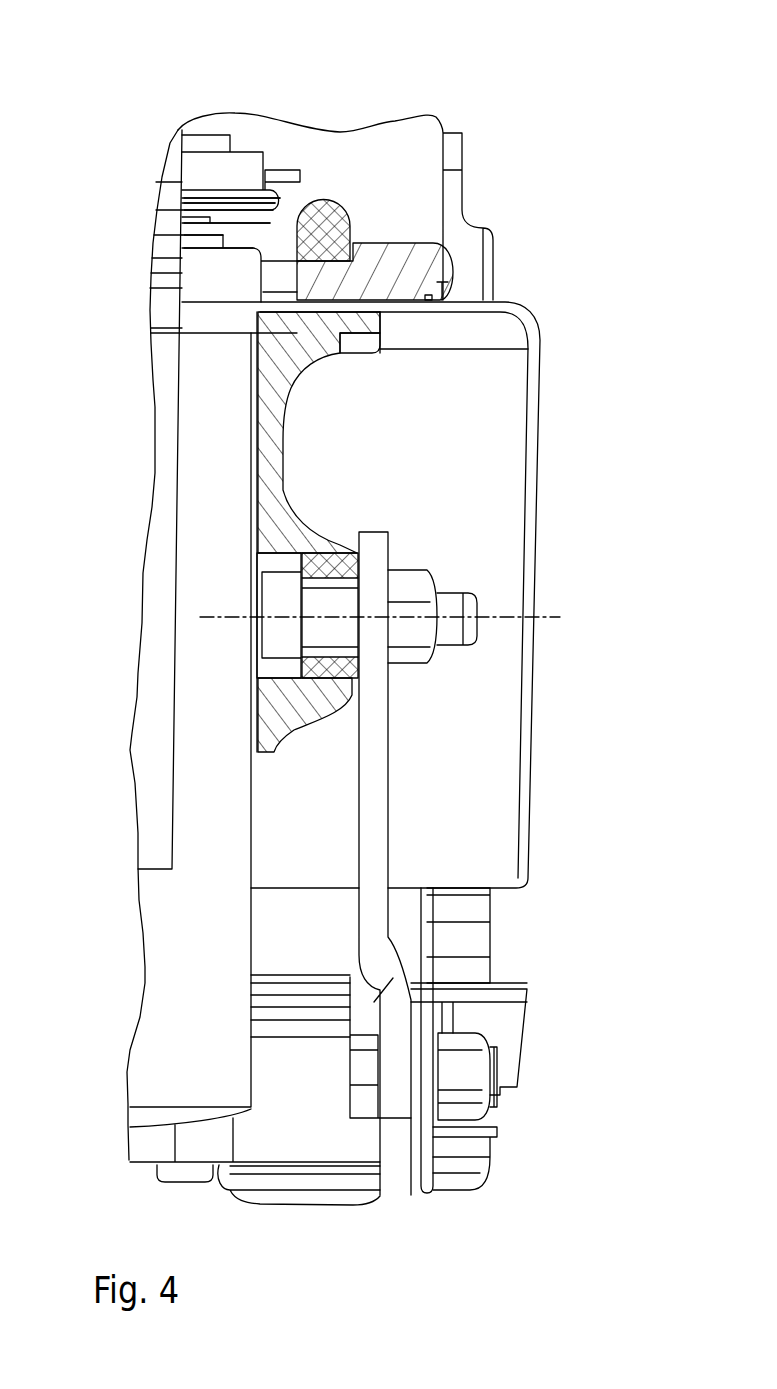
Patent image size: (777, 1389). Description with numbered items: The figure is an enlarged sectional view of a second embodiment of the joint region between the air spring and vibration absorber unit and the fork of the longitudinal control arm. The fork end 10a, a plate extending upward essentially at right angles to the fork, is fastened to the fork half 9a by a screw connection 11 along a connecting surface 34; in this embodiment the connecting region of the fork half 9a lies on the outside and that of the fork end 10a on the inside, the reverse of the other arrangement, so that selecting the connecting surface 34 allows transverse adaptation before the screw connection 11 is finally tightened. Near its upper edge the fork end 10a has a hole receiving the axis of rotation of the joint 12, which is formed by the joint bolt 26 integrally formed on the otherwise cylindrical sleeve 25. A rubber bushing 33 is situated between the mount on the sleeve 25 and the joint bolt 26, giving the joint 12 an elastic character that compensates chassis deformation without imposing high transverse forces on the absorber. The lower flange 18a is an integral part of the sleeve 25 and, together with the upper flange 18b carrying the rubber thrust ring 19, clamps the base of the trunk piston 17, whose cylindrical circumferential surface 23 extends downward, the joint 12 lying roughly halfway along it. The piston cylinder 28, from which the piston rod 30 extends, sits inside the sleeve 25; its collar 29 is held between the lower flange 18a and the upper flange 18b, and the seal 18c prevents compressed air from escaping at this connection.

The fork half 9a is at (427, 1177).
The fork end 10a is at (370, 818).
The screw connection 11 is at (455, 1098).
The joint 12 is at (513, 622).
The trunk piston 17 is at (540, 433).
The lower flange 18a is at (403, 318).
The upper flange 18b is at (400, 253).
The seal 18c is at (284, 262).
The thrust ring 19 is at (349, 208).
The circumferential surface 23 is at (532, 531).
The sleeve 25 is at (277, 440).
The joint bolt 26 is at (313, 601).
The piston cylinder 28 is at (163, 982).
The collar 29 is at (303, 357).
The piston rod 30 is at (210, 198).
The rubber bushing 33 is at (360, 680).
The connecting surface 34 is at (407, 1130).